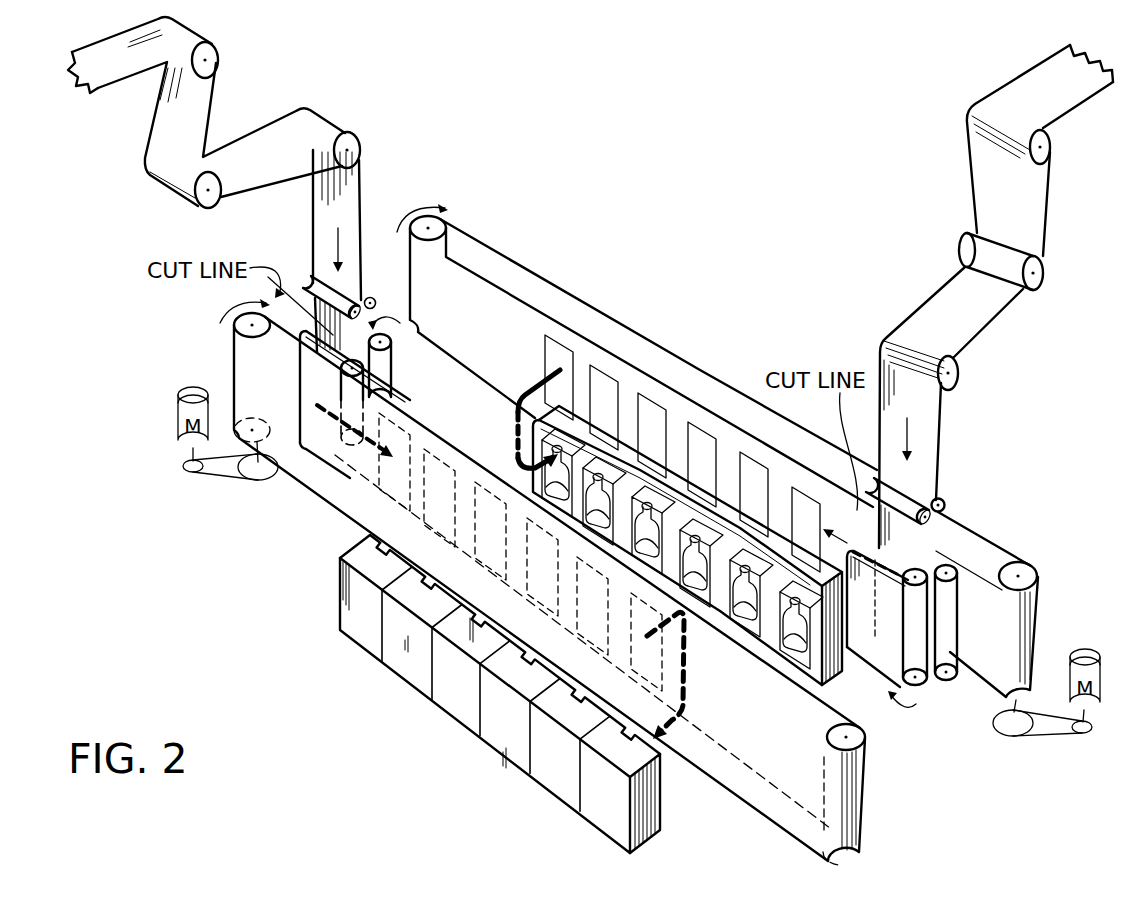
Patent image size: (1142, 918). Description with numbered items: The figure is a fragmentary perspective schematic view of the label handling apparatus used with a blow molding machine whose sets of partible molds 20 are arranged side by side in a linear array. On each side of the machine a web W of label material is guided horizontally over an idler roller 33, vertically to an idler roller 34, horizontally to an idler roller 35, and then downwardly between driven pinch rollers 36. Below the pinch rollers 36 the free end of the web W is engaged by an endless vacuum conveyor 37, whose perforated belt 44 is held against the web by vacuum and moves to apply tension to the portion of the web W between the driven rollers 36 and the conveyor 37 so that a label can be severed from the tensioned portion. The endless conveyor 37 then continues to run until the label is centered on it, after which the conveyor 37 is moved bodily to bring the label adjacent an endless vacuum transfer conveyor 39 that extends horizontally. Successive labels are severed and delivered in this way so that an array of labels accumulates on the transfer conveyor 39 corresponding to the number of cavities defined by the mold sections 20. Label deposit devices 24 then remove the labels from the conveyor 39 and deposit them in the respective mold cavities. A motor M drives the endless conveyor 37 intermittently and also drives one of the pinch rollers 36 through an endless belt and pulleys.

The partible molds 20 is at (604, 812).
The label deposit device 24 is at (681, 720).
The idler roller 33 is at (218, 58).
The idler roller 34 is at (206, 208).
The idler roller 35 is at (360, 146).
The driven pinch rollers 36 is at (944, 502).
The endless vacuum conveyor 37 is at (399, 373).
The endless vacuum transfer conveyor 39 is at (312, 483).
The perforated belt 44 is at (395, 391).
The web W is at (98, 73).